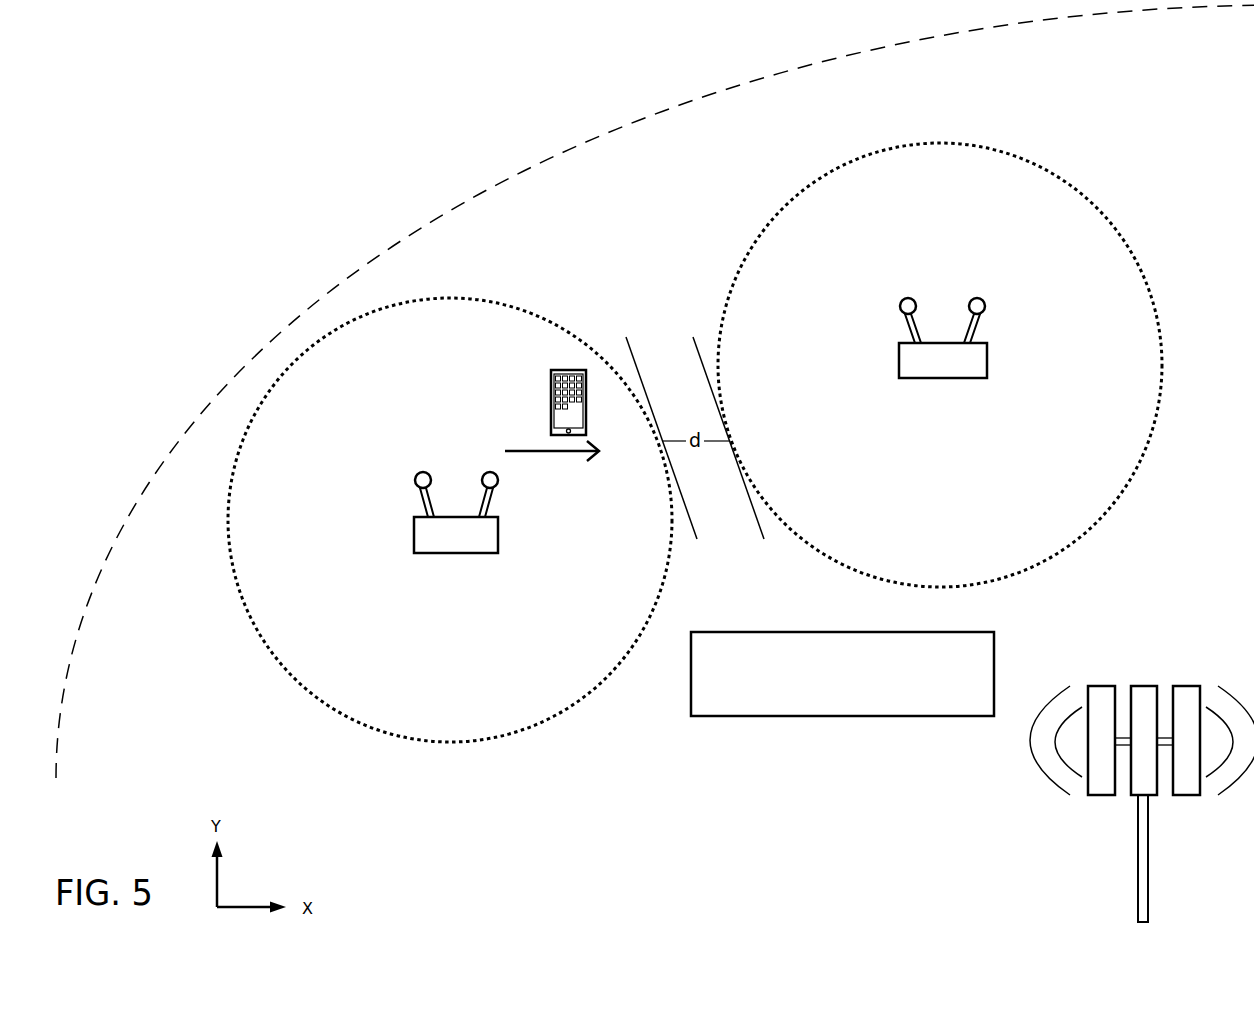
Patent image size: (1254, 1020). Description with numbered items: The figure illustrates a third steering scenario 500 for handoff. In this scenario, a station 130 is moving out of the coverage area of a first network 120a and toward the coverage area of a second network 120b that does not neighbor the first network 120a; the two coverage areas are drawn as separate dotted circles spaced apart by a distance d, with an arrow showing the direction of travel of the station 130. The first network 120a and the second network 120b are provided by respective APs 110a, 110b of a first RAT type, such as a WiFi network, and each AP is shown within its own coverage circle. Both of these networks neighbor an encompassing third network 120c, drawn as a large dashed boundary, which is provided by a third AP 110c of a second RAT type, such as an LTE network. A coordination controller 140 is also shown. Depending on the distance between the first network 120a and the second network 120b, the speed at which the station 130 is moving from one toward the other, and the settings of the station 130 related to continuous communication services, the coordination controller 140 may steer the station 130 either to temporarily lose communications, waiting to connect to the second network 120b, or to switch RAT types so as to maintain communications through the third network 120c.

The third steering scenario 500 is at (178, 128).
The first AP 110a is at (414, 534).
The second AP 110b is at (987, 357).
The third AP 110c is at (1138, 882).
The first network 120a is at (573, 708).
The second network 120b is at (1133, 253).
The third network 120c is at (360, 268).
The station 130 is at (550, 403).
The coordination controller 140 is at (858, 696).